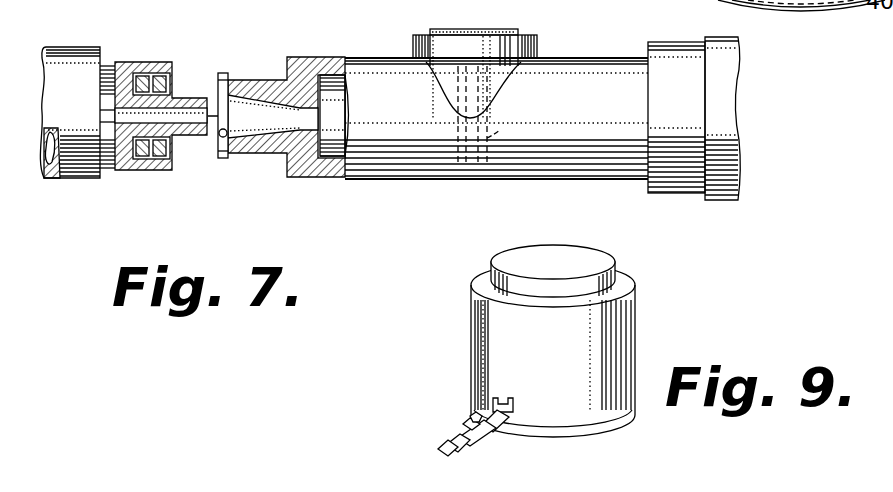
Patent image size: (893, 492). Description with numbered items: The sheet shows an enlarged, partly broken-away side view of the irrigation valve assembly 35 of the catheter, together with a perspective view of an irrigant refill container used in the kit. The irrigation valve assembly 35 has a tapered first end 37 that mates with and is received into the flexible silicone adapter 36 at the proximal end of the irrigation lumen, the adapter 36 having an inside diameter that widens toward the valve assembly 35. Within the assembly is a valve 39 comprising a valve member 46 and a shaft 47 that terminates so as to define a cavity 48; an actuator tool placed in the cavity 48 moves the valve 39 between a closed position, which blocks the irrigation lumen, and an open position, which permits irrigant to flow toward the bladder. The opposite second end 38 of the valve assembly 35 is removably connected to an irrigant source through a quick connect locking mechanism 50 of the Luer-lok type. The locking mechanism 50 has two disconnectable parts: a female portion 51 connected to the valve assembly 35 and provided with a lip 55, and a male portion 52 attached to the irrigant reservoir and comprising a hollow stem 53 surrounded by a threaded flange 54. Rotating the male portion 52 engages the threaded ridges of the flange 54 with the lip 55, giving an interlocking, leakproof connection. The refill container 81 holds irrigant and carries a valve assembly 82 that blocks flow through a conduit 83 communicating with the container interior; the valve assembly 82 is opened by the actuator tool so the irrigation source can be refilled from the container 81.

In FIG. 7, the irrigation valve assembly 35 is at (571, 58).
In FIG. 7, the flexible silicone adapter 36 is at (731, 201).
In FIG. 7, the first end 37 is at (684, 194).
In FIG. 7, the second end 38 is at (268, 120).
In FIG. 7, the valve 39 is at (487, 138).
In FIG. 7, the valve member 46 is at (458, 118).
In FIG. 7, the shaft 47 is at (488, 118).
In FIG. 7, the cavity 48 is at (505, 46).
In FIG. 7, the quick connect locking mechanism 50 is at (174, 144).
In FIG. 7, the female portion 51 is at (219, 136).
In FIG. 7, the male portion 52 is at (194, 99).
In FIG. 7, the hollow stem 53 is at (114, 112).
In FIG. 7, the threaded flange 54 is at (176, 161).
In FIG. 7, the lip 55 is at (229, 76).
In FIG. 9, the reservoir refill container of irrigant 81 is at (471, 339).
In FIG. 9, the valve assembly 82 is at (488, 433).
In FIG. 9, the conduit 83 is at (440, 434).